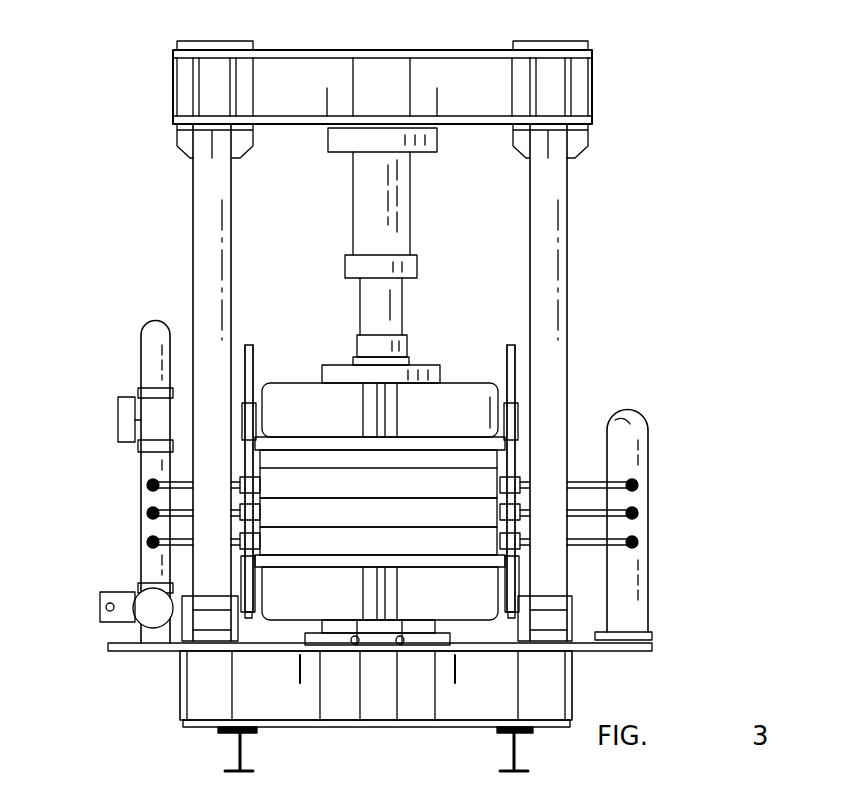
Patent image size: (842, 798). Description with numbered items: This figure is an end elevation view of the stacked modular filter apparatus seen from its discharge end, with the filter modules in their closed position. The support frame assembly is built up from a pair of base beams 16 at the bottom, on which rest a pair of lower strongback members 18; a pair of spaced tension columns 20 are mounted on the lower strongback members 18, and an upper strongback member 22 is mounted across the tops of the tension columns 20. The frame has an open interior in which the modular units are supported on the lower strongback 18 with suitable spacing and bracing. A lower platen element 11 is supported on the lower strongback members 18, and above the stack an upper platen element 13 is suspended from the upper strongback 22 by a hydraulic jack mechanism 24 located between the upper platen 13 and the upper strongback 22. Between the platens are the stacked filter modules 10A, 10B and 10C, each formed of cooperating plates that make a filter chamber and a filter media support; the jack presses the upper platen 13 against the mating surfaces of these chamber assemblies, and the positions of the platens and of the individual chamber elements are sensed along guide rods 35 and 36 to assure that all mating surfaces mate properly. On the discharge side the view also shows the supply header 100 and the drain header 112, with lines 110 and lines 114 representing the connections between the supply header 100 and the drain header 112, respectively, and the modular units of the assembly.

The upper strongback member 22 is at (287, 49).
The tension columns 20 is at (567, 265).
The hydraulic jack mechanism 24 is at (402, 310).
The upper platen element 13 is at (300, 383).
The guide rod 35 is at (243, 355).
The guide rod 36 is at (380, 478).
The filter module 10A is at (335, 497).
The filter module 10B is at (400, 527).
The filter module 10C is at (465, 556).
The lower platen element 11 is at (462, 604).
The lower strongback members 18 is at (200, 684).
The base beams 16 is at (242, 745).
The supply header 100 is at (140, 566).
The lines 110 is at (148, 497).
The lines 114 is at (585, 510).
The drain header 112 is at (622, 600).